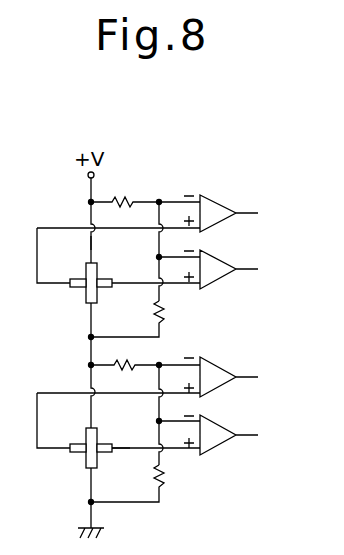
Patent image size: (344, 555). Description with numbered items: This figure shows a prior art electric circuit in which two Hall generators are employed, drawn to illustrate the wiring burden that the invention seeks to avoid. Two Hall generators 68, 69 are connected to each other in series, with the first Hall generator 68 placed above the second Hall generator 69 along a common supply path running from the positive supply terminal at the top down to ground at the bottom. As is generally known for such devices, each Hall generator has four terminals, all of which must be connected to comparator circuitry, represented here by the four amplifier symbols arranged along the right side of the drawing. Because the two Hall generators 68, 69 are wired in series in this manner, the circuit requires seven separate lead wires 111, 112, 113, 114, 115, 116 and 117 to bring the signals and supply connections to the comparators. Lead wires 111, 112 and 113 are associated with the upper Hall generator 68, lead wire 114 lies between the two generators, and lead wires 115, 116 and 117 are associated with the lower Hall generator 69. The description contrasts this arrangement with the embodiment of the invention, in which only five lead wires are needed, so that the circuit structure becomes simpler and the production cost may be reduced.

The Hall generator 68 is at (78, 300).
The Hall generator 69 is at (78, 465).
The lead wire 111 is at (88, 243).
The lead wire 112 is at (59, 277).
The lead wire 113 is at (137, 272).
The lead wire 114 is at (92, 351).
The lead wire 115 is at (55, 445).
The lead wire 116 is at (132, 443).
The lead wire 117 is at (97, 485).